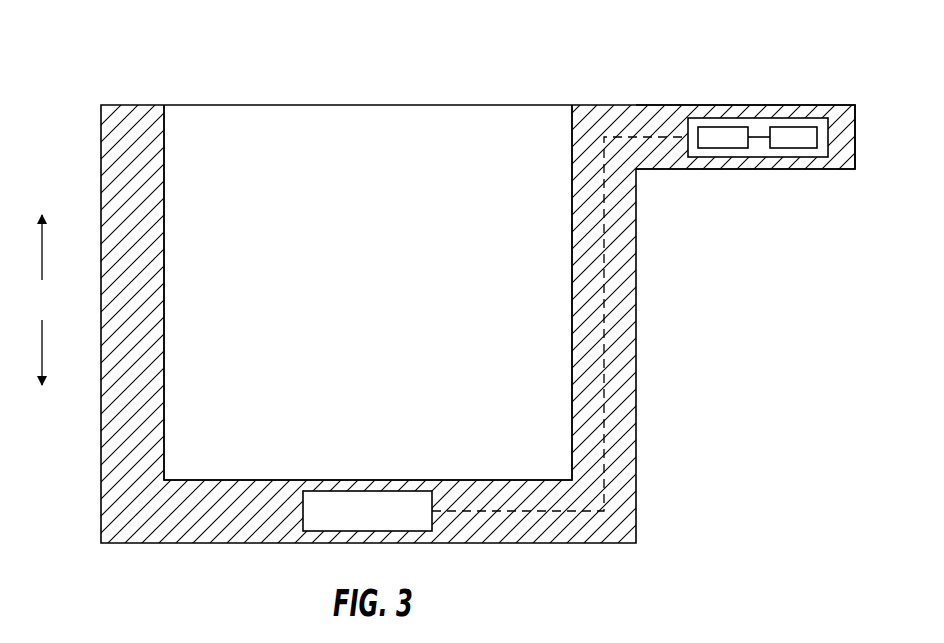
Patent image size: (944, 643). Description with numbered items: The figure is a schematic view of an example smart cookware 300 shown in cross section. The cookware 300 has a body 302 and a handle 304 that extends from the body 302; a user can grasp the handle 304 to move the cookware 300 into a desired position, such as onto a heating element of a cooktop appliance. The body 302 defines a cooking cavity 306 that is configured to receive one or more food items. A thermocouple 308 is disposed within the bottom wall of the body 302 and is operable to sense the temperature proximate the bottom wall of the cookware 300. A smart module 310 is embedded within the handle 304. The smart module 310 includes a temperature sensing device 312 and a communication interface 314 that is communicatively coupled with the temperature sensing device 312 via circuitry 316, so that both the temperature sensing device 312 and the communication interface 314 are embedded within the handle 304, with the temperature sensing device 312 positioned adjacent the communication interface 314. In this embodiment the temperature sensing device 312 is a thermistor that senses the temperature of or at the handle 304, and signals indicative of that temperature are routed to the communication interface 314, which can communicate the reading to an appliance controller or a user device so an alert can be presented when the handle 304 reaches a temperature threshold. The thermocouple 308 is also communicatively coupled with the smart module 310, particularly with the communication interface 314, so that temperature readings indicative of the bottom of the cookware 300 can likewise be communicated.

The smart cookware 300 is at (136, 70).
The body 302 is at (636, 393).
The handle 304 is at (723, 105).
The cooking cavity 306 is at (401, 145).
The thermocouple 308 is at (385, 525).
The smart module 310 is at (795, 118).
The temperature sensing device 312 is at (720, 148).
The communication interface 314 is at (798, 148).
The circuitry 316 is at (760, 140).